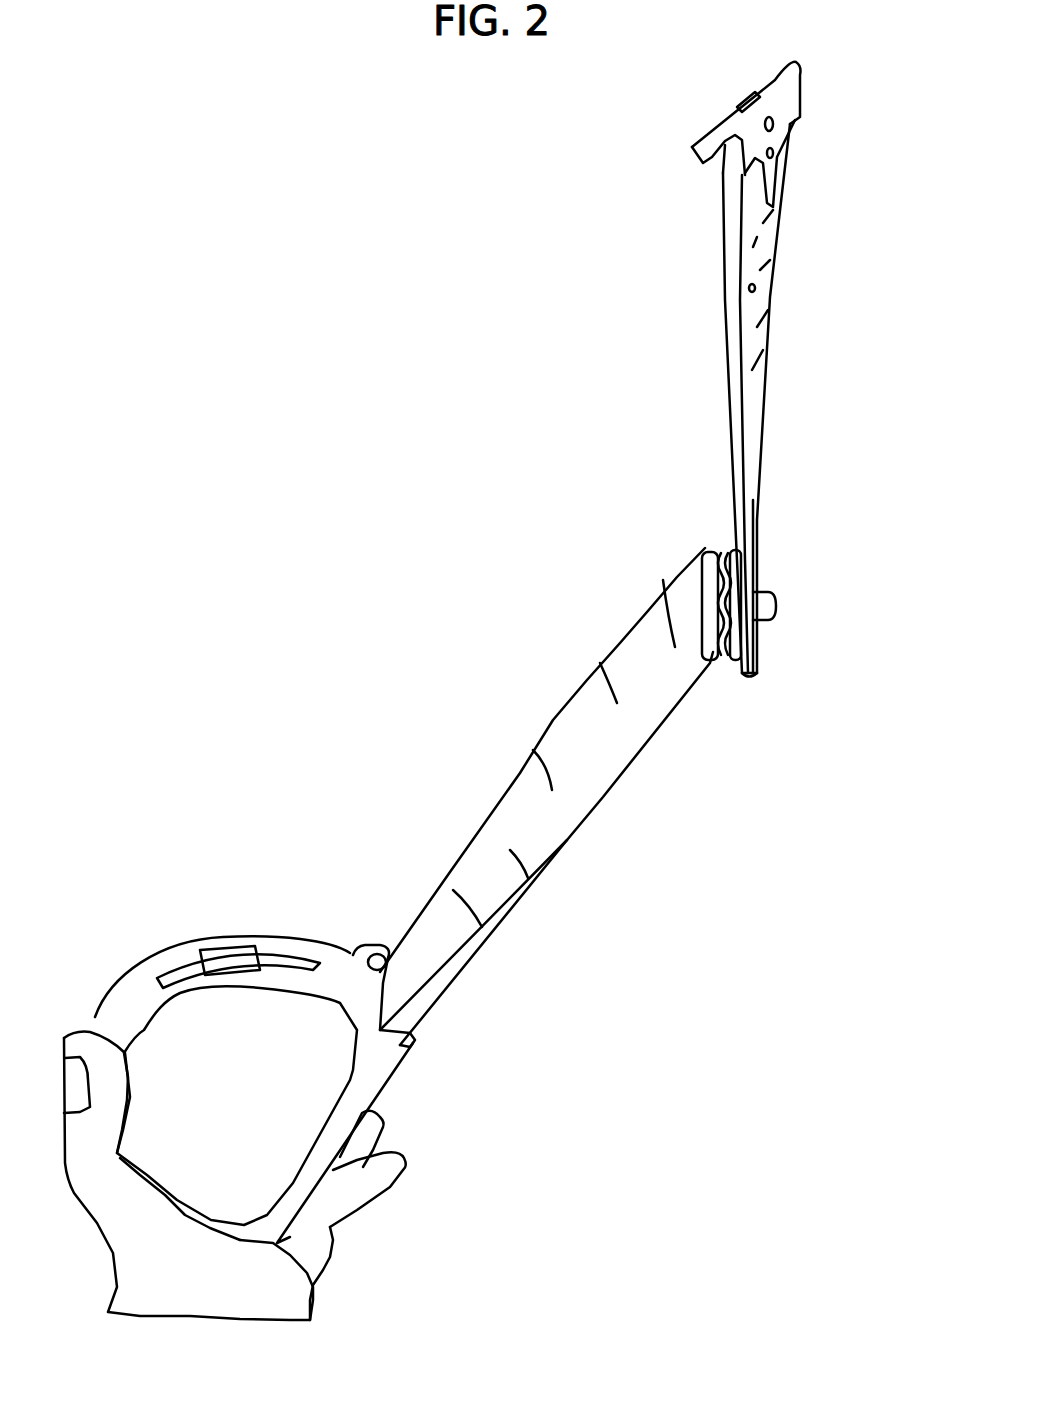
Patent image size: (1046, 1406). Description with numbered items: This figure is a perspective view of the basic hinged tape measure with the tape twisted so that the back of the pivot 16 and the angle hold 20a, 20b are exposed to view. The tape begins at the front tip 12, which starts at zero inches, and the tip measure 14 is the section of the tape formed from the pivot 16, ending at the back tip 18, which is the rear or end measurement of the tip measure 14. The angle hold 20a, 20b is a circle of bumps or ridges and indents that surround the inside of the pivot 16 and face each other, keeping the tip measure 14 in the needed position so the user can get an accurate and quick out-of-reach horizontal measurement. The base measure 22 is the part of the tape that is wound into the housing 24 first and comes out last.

The front tip 12 is at (712, 87).
The tip measure 14 is at (698, 215).
The pivot 16 is at (802, 605).
The back tip 18 is at (750, 683).
The angle hold 20a is at (730, 540).
The angle hold 20b is at (690, 545).
The base measure 22 is at (522, 745).
The housing 24 is at (395, 1077).